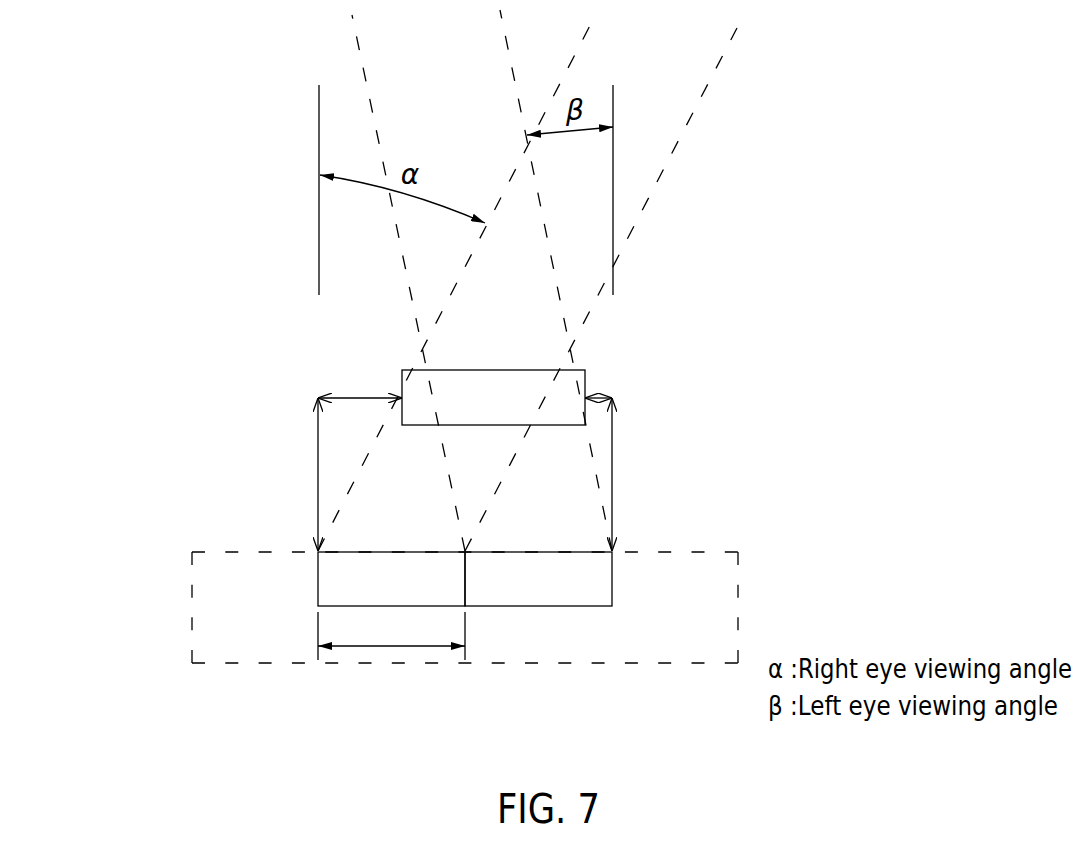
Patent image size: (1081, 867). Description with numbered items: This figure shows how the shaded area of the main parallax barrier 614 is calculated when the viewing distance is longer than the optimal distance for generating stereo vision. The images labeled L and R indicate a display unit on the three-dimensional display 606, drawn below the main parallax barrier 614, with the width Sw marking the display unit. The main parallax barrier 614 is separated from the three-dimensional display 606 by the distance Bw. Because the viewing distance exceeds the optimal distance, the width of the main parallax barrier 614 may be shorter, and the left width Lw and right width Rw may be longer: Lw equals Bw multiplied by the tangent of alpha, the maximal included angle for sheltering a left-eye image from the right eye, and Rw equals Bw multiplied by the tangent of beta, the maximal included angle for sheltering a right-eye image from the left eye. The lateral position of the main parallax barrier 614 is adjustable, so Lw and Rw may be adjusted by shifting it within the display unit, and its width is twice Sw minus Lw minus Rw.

The main parallax barrier 614 is at (473, 413).
The 3D display 606 is at (511, 607).
The left image L is at (391, 579).
The right image R is at (538, 579).
The left width Lw is at (360, 379).
The right width Rw is at (606, 381).
The distance between main parallax barrier and 3D display Bw is at (444, 474).
The display unit width Sw is at (391, 636).